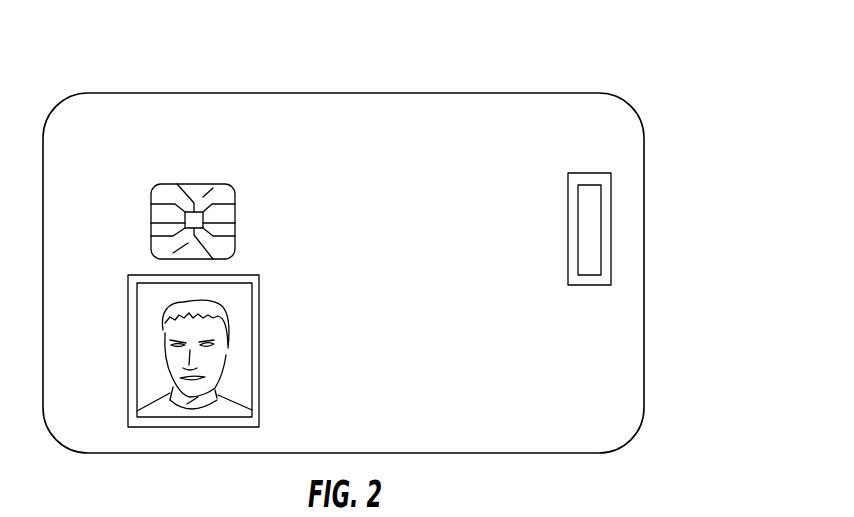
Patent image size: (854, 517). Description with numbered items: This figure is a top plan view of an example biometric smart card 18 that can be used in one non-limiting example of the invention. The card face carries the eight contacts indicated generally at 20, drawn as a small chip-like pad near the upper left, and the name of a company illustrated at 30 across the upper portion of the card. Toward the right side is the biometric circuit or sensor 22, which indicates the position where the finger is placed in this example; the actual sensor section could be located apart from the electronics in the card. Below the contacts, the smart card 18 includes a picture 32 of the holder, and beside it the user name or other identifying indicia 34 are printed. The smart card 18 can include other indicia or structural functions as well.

The biometric smart card 18 is at (428, 93).
The eight contacts 20 is at (172, 184).
The biometric circuit or sensor 22 is at (611, 228).
The name of a company 30 is at (478, 137).
The picture 32 is at (127, 353).
The user name or other identifying indicia 34 is at (415, 353).